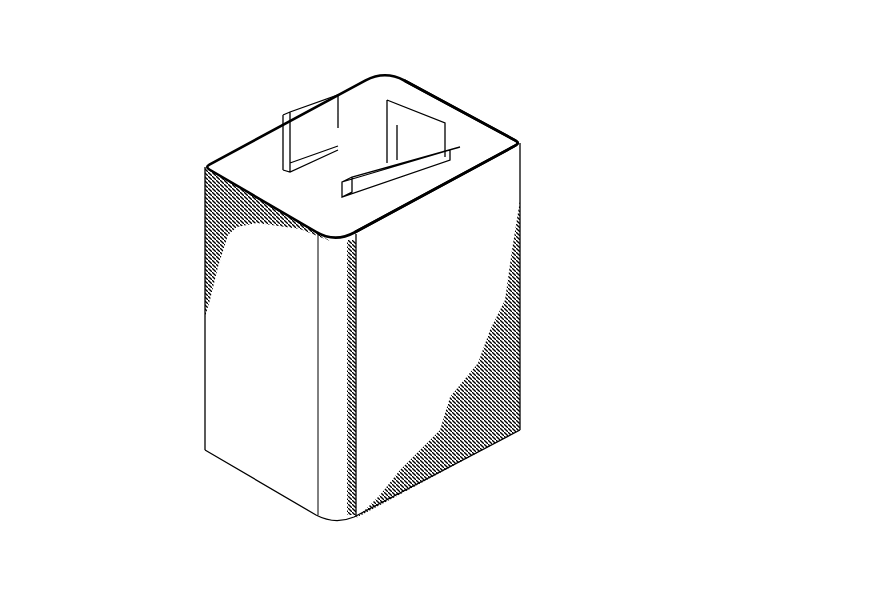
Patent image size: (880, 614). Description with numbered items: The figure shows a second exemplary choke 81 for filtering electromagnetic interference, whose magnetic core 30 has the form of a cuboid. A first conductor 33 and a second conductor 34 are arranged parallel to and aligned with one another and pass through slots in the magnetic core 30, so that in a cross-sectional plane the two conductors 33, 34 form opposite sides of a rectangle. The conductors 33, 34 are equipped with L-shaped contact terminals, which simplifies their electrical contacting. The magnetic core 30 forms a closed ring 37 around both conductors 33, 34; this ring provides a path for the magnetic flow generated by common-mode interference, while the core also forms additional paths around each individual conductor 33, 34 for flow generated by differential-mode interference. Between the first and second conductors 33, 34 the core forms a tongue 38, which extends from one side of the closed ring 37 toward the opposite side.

The magnetic core 30 is at (273, 332).
The first conductor 33 is at (449, 106).
The second conductor 34 is at (256, 102).
The closed ring 37 is at (498, 148).
The tongue 38 is at (316, 156).
The choke 81 is at (648, 147).